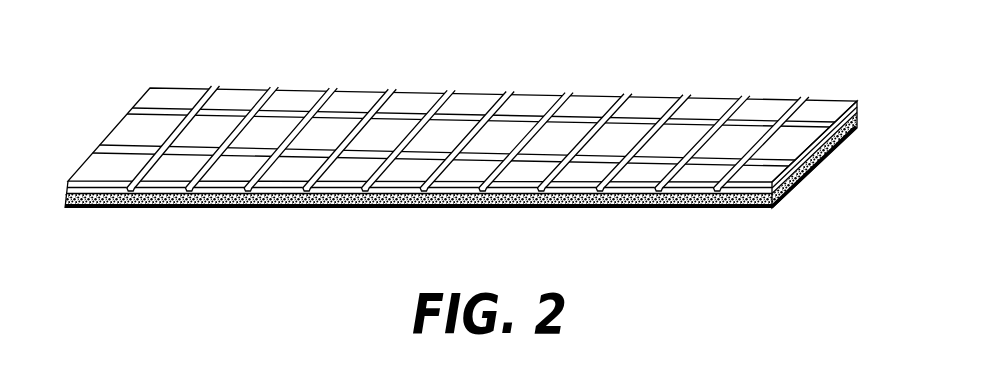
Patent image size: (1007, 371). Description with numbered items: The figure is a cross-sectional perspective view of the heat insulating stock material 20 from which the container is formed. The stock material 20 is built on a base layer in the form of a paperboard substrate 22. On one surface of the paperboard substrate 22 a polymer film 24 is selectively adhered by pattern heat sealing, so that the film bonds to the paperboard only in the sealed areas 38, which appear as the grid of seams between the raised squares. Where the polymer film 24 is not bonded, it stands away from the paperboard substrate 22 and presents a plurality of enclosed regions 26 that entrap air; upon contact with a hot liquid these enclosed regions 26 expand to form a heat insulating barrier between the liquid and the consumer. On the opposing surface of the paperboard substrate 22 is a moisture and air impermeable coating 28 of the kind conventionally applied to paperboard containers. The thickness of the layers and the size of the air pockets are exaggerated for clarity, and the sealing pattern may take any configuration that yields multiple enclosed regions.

The heat insulating stock material 20 is at (271, 64).
The paperboard substrate 22 is at (284, 202).
The polymer film 24 is at (857, 104).
The enclosed regions 26 is at (437, 137).
The moisture and air impermeable coating 28 is at (452, 205).
The sealed areas 38 is at (388, 93).